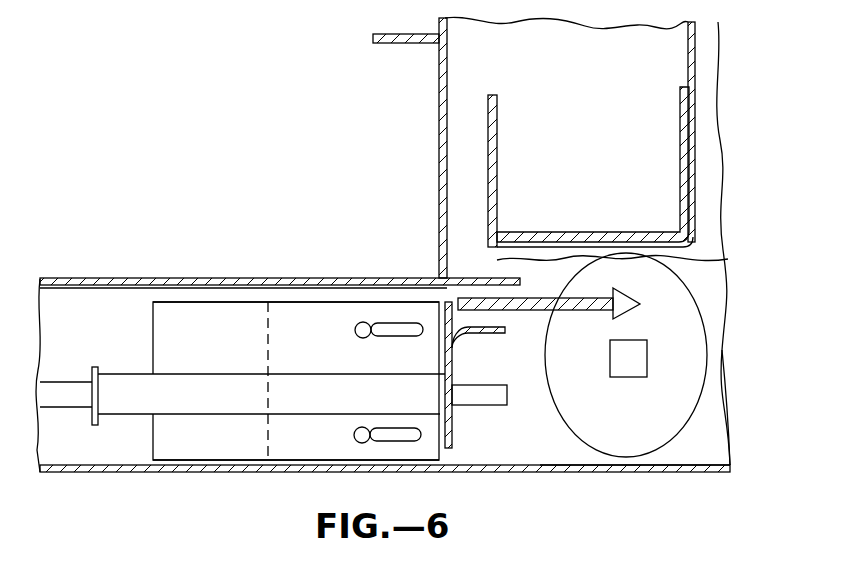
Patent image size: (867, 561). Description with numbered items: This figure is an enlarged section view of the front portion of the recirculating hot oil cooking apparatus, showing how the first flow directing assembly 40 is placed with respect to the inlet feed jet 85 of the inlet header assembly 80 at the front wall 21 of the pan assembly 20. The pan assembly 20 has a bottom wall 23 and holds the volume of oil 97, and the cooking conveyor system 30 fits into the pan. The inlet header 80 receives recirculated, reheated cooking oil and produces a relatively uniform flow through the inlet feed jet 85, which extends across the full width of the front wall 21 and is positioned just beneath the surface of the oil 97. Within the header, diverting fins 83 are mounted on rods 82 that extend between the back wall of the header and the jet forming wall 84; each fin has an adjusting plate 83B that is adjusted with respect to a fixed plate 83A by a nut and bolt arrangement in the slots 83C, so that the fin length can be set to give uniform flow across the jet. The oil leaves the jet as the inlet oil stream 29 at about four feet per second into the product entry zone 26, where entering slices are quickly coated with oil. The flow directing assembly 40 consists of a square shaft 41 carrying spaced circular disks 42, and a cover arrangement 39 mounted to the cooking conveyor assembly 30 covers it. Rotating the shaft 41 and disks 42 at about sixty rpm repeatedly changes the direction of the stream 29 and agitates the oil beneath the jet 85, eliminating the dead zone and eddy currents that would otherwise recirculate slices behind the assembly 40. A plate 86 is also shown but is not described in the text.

The pan assembly 20 is at (670, 475).
The front wall 21 is at (445, 225).
The bottom wall 23 is at (585, 472).
The product entry zone 26 is at (718, 378).
The inlet oil stream 29 is at (538, 302).
The cooking conveyor system 30 is at (707, 77).
The cover arrangement 39 is at (683, 138).
The flow directing assembly 40 is at (702, 433).
The square shaft 41 is at (632, 358).
The circular disks 42 is at (685, 328).
The inlet header assembly 80 is at (237, 278).
The rods 82 is at (77, 390).
The diverting fins 83 is at (247, 333).
The fixed plates 83A is at (395, 315).
The adjusting plates 83B is at (202, 323).
The slots 83C is at (385, 333).
The jet forming wall 84 is at (485, 333).
The inlet feed jet 85 is at (447, 290).
The vertical plate 86 is at (465, 448).
The volume of oil 97 is at (712, 275).